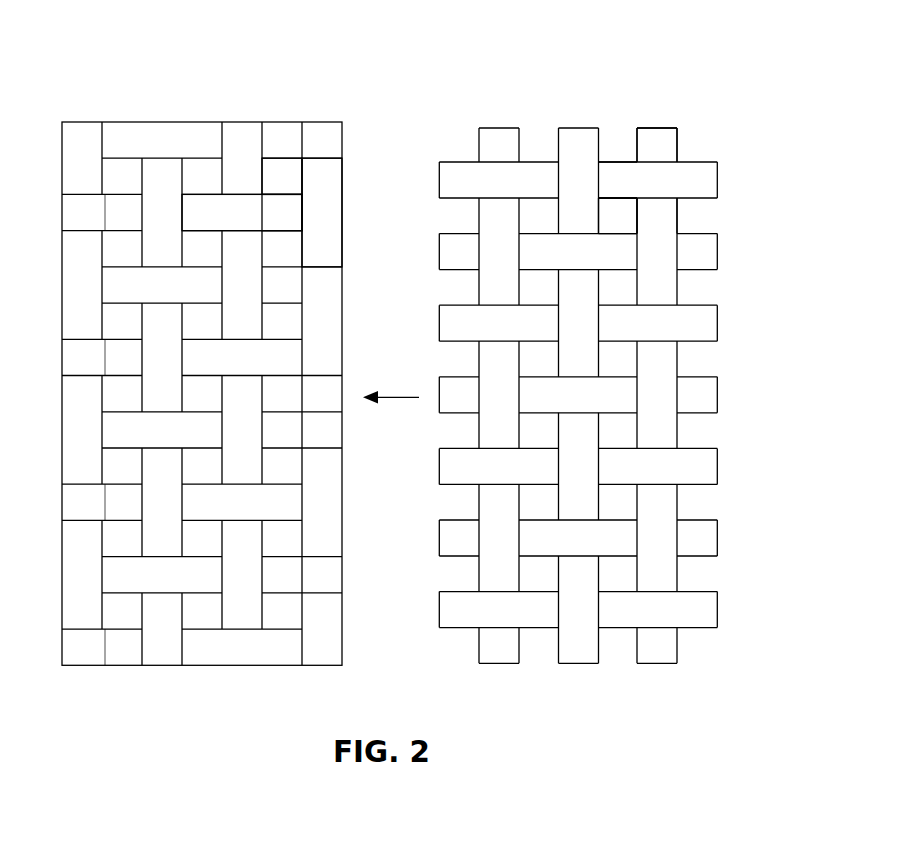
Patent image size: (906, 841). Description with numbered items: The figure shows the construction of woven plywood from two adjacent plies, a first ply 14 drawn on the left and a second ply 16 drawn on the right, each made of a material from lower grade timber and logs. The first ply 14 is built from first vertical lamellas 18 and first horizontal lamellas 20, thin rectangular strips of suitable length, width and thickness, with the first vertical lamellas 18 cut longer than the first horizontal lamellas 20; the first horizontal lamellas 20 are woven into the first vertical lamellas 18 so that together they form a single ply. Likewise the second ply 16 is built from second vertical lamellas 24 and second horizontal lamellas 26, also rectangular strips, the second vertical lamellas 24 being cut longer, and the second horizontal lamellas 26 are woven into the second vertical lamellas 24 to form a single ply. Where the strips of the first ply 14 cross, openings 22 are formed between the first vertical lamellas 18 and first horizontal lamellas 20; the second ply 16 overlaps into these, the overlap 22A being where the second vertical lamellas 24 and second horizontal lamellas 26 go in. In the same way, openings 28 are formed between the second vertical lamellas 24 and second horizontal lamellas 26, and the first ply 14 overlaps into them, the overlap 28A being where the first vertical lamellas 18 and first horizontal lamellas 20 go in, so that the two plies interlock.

The first ply 14 is at (86, 103).
The second ply 16 is at (474, 101).
The first vertical lamellas 18 is at (321, 223).
The first horizontal lamellas 20 is at (278, 212).
The openings 22 is at (293, 177).
The overlap of second ply into openings 22A is at (662, 178).
The second vertical lamellas 24 is at (582, 153).
The second horizontal lamellas 26 is at (622, 178).
The openings 28 is at (623, 220).
The overlap of first ply into openings 28A is at (240, 212).